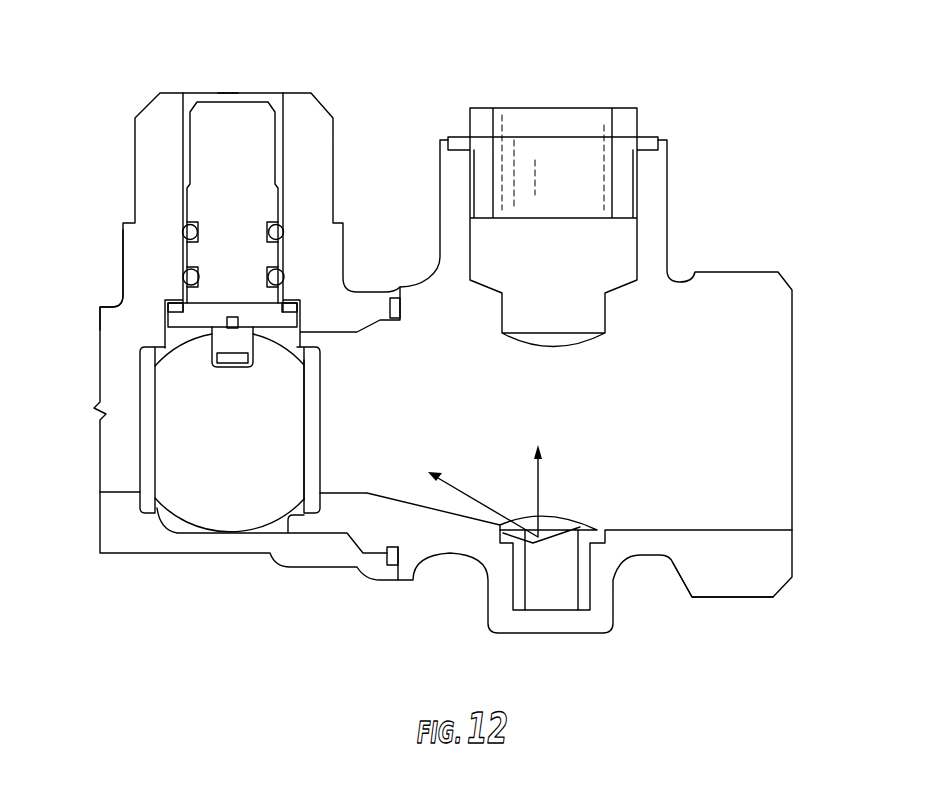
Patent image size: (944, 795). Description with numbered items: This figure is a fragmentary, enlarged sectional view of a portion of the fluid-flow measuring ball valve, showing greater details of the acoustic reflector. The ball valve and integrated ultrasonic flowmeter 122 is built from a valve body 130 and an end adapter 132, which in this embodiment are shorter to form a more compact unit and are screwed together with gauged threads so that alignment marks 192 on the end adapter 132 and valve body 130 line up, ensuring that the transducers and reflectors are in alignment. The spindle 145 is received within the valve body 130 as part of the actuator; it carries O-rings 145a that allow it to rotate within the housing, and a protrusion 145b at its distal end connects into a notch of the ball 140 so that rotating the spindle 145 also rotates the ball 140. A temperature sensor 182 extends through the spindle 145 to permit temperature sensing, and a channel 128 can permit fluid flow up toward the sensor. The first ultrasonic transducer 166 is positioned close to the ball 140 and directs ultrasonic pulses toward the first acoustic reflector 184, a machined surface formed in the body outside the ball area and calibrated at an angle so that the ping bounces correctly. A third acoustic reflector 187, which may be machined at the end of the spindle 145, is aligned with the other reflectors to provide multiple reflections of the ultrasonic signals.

The valve body 122 is at (779, 219).
The fluid passage 128 is at (310, 490).
The valve body 130 is at (108, 300).
The end adapter 132 is at (690, 596).
The ball 140 is at (230, 507).
The spindle 145 is at (243, 113).
The O-rings 145a is at (283, 274).
The protrusion 145b is at (232, 314).
The first ultrasonic transducer 166 is at (607, 257).
The temperature sensor 182 is at (227, 93).
The first acoustic reflector 184 is at (522, 543).
The third acoustic reflector 187 is at (236, 357).
The alignment marks 192 is at (402, 280).